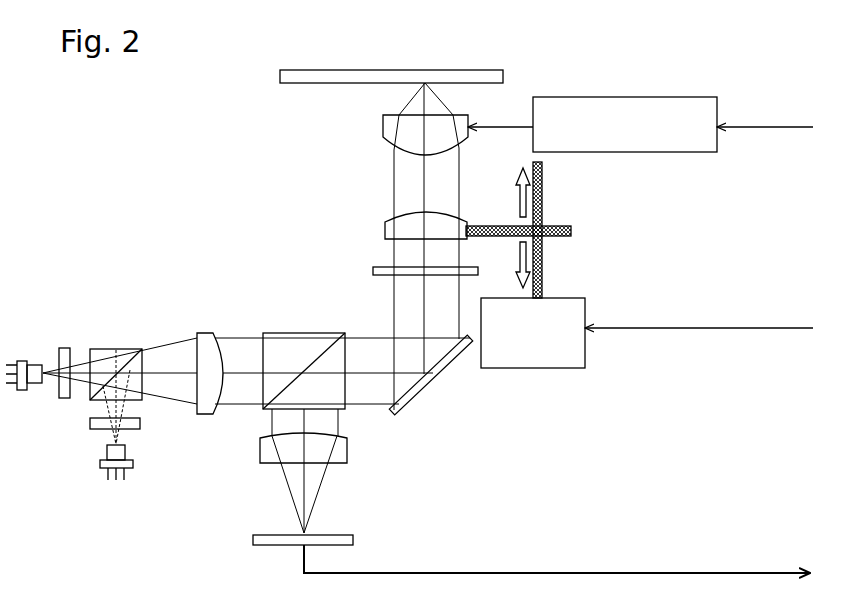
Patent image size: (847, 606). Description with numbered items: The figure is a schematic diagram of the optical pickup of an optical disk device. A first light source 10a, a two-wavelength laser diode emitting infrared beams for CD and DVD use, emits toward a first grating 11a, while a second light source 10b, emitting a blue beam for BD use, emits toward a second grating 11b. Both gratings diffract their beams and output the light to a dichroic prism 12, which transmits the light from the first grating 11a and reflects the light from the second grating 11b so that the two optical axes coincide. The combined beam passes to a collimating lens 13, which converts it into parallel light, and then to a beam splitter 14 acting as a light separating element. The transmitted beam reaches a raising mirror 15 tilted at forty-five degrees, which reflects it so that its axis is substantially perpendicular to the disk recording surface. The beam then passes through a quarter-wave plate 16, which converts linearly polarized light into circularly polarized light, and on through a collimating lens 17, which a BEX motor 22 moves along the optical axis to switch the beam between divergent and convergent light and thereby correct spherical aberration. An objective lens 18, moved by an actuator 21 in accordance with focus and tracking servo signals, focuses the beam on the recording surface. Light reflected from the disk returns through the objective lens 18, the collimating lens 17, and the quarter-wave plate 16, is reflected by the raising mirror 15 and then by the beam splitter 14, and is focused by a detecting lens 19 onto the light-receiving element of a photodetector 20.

The first light source 10a is at (22, 361).
The second light source 10b is at (133, 463).
The first grating 11a is at (66, 348).
The second grating 11b is at (140, 422).
The dichroic prism 12 is at (118, 349).
The collimating lens 13 is at (205, 333).
The beam splitter 14 is at (305, 333).
The raising mirror 15 is at (433, 381).
The quarter-wave plate 16 is at (478, 269).
The collimating lens 17 is at (467, 225).
The objective lens 18 is at (470, 117).
The detecting lens 19 is at (348, 440).
The photodetector 20 is at (355, 536).
The actuator 21 is at (619, 97).
The BEX motor 22 is at (572, 298).